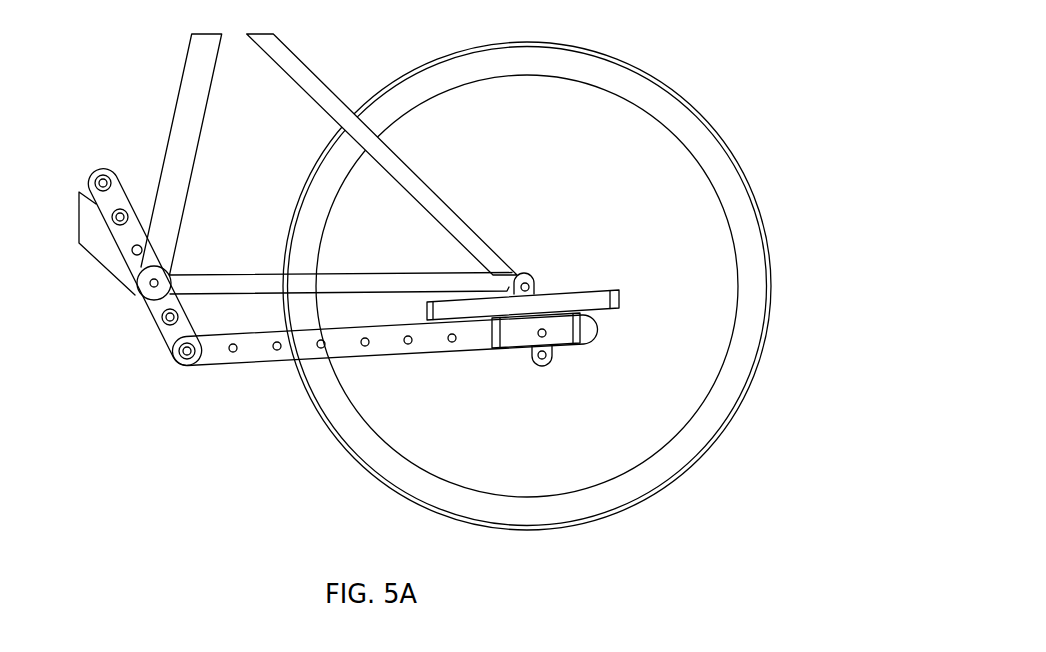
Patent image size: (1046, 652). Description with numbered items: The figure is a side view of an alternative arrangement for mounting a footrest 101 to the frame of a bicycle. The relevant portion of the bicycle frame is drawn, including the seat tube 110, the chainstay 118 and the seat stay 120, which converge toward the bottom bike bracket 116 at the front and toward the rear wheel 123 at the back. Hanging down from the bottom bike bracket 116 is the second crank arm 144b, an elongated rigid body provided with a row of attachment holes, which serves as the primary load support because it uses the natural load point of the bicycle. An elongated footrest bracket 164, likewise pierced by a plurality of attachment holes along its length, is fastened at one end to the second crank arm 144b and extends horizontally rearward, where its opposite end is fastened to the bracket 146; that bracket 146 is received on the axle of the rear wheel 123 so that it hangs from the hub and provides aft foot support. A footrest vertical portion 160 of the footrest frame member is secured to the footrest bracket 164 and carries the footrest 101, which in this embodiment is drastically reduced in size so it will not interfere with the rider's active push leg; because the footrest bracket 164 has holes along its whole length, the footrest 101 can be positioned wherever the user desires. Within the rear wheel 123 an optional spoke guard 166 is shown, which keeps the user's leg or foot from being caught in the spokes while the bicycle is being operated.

The footrest 101 is at (619, 298).
The seat tube 110 is at (175, 118).
The bottom bike bracket 116 is at (138, 290).
The chainstay 118 is at (223, 276).
The seat stay 120 is at (322, 77).
The rear wheel 123 is at (773, 297).
The second crank arm 144b is at (162, 342).
The bracket 146 is at (530, 274).
The footrest vertical portion 160 is at (497, 348).
The elongated footrest bracket 164 is at (281, 363).
The spoke guard 166 is at (655, 162).